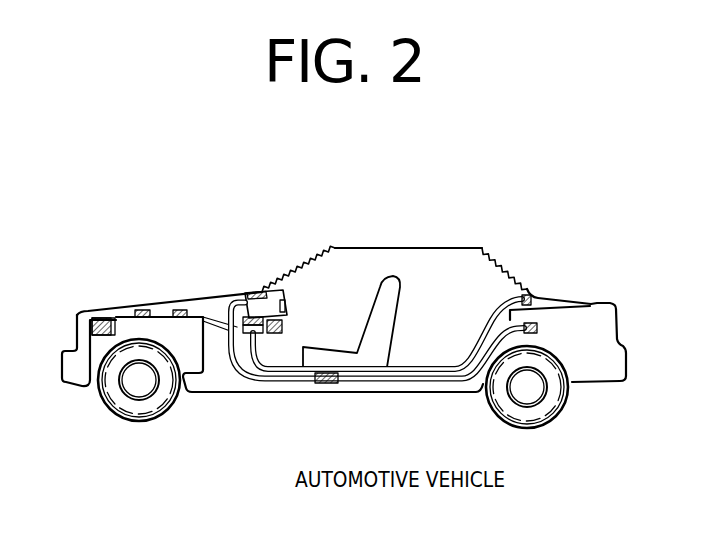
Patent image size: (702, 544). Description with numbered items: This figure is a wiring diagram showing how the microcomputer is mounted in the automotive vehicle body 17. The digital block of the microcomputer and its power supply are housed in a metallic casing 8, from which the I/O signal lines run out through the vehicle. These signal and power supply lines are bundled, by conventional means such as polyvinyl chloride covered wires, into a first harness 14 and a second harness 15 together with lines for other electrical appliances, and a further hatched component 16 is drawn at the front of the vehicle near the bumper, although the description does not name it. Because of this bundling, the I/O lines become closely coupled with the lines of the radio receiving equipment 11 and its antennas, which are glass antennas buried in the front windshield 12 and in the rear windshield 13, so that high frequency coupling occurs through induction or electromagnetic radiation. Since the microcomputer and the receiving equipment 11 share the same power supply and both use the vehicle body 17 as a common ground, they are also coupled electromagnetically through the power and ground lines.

The metallic casing 8 is at (251, 316).
The radio receiving equipment 11 is at (278, 335).
The front windshield antenna 12 is at (300, 263).
The rear windshield antenna 13 is at (518, 272).
The first harness 14 is at (237, 306).
The second harness 15 is at (417, 372).
The front sensor 16 is at (103, 317).
The vehicle body 17 is at (76, 335).